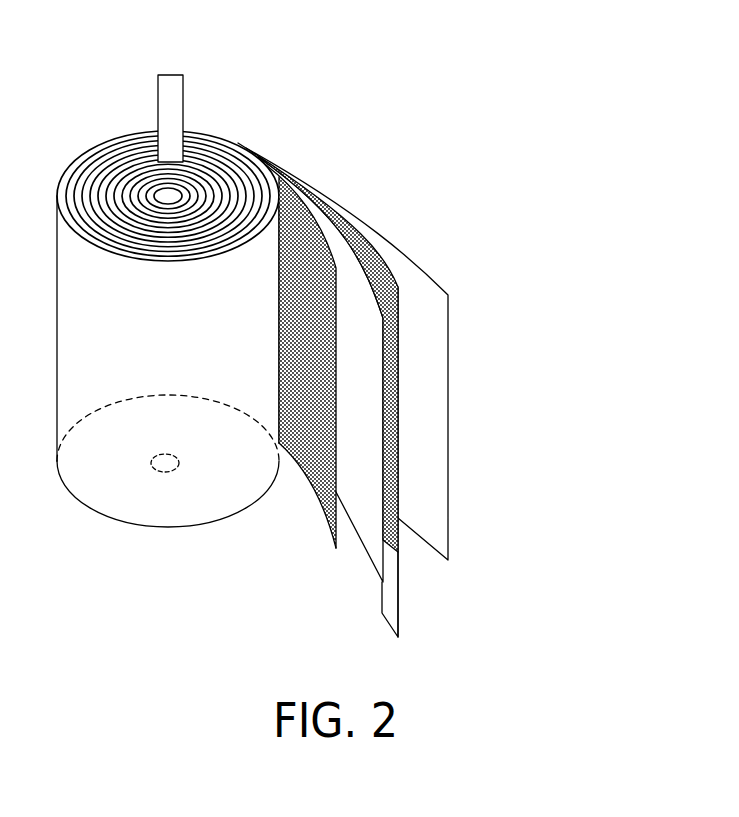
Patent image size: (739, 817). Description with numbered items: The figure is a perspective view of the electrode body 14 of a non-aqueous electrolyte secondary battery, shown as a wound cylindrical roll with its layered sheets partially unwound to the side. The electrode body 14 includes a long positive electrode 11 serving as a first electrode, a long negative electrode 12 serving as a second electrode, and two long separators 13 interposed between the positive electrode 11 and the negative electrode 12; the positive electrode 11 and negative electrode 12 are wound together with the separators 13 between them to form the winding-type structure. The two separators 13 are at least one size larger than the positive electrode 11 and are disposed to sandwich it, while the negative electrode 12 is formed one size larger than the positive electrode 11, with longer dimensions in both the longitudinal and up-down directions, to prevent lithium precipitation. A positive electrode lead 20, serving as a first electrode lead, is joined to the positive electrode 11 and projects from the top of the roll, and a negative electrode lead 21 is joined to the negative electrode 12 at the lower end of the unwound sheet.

The positive electrode 11 is at (304, 224).
The negative electrode 12 is at (378, 276).
The separator 13 is at (360, 417).
The electrode body 14 is at (458, 55).
The positive electrode lead 20 is at (168, 85).
The negative electrode lead 21 is at (388, 605).